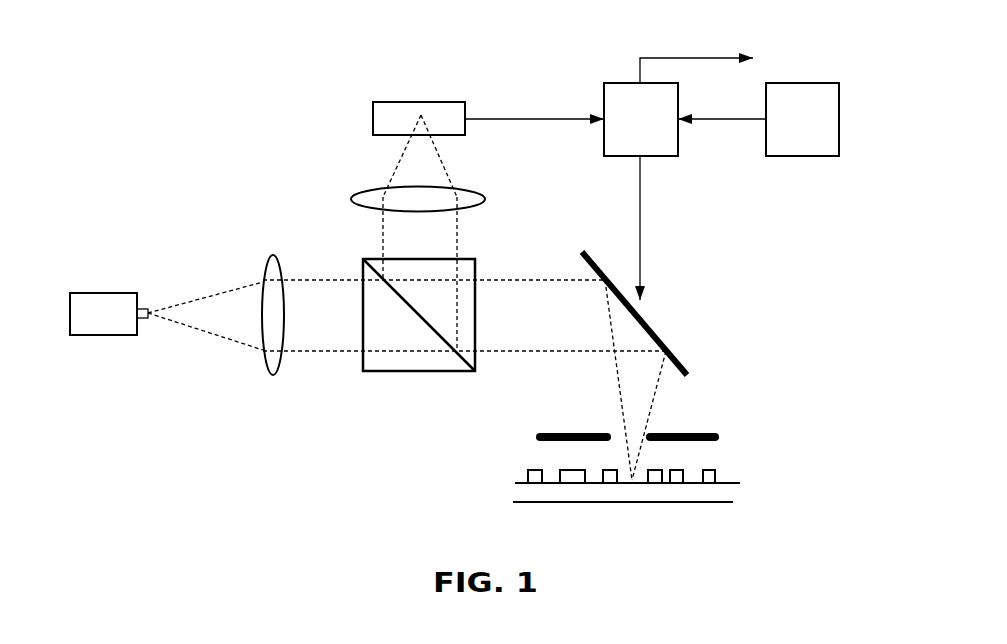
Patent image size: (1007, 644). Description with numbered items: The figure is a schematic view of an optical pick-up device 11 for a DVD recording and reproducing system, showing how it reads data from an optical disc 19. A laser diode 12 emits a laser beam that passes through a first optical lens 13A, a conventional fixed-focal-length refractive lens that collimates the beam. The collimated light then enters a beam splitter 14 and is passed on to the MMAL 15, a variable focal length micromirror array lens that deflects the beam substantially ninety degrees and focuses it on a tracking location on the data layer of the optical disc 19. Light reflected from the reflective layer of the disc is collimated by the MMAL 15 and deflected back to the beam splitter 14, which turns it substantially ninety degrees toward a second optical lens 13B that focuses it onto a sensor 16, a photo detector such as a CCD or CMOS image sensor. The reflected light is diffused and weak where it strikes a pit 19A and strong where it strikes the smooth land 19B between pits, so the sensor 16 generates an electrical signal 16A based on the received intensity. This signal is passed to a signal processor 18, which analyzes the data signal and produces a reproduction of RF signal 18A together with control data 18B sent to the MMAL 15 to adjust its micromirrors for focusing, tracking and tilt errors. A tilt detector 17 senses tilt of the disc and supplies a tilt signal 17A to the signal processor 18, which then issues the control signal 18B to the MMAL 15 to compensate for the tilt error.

The optical pick-up device 11 is at (227, 113).
The laser diode 12 is at (127, 328).
The first optical lens 13A is at (272, 365).
The second optical lens 13B is at (370, 197).
The beam splitter 14 is at (369, 364).
The MMAL 15 is at (675, 355).
The sensor 16 is at (388, 112).
The electrical signal 16A is at (545, 115).
The tilt detector 17 is at (792, 147).
The tilt signal 17A is at (710, 120).
The signal processor 18 is at (615, 104).
The reproduction of RF signal 18A is at (693, 55).
The control data 18B is at (633, 252).
The optical disc 19 is at (732, 490).
The pit 19A is at (715, 470).
The land 19B is at (733, 480).